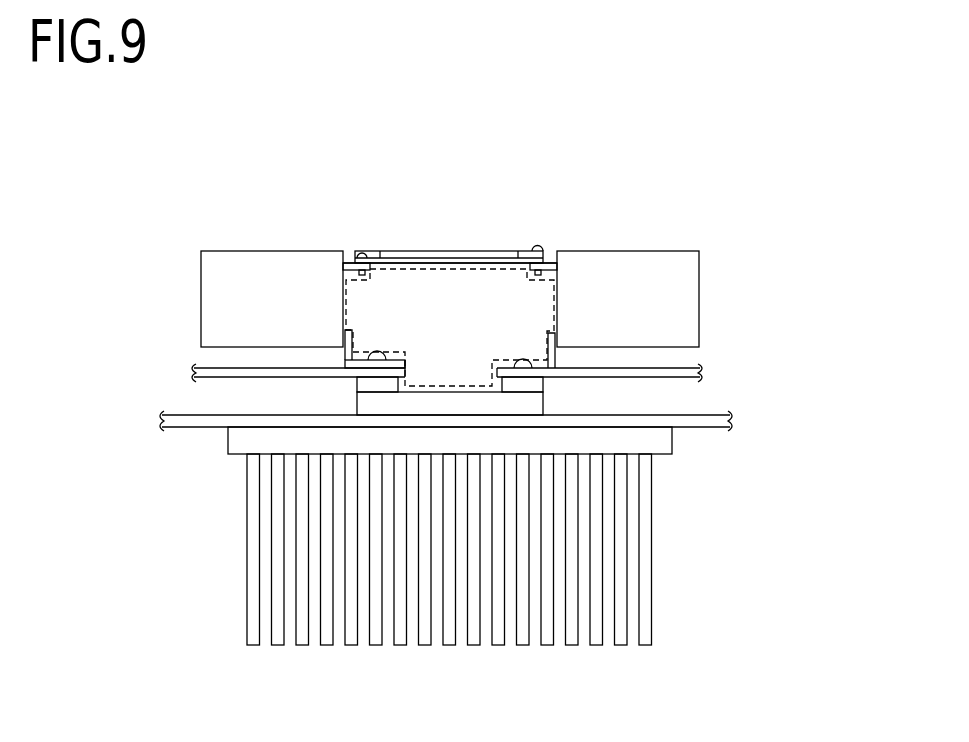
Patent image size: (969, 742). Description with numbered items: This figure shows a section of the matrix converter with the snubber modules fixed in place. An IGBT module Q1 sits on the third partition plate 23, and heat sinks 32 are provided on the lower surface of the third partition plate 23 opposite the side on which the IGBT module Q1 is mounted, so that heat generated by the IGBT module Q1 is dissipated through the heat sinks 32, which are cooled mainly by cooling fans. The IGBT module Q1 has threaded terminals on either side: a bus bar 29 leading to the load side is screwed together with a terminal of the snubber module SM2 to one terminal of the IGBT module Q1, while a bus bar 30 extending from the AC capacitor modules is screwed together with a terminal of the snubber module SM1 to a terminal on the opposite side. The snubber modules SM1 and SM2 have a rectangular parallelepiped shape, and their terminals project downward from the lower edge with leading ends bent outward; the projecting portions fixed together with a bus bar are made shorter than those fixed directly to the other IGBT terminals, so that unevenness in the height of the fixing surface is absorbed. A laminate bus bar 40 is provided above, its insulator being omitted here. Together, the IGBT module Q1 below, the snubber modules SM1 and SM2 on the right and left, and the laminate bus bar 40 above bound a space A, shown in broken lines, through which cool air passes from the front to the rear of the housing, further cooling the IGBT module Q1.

The laminate bus bar 40 is at (446, 250).
The space A is at (545, 298).
The snubber module SM1 is at (228, 294).
The snubber module SM2 is at (680, 284).
The bus bar 30 is at (195, 370).
The bus bar 29 is at (700, 377).
The IGBT module Q1 is at (377, 406).
The third partition plate 23 is at (722, 427).
The heat sinks 32 is at (648, 552).